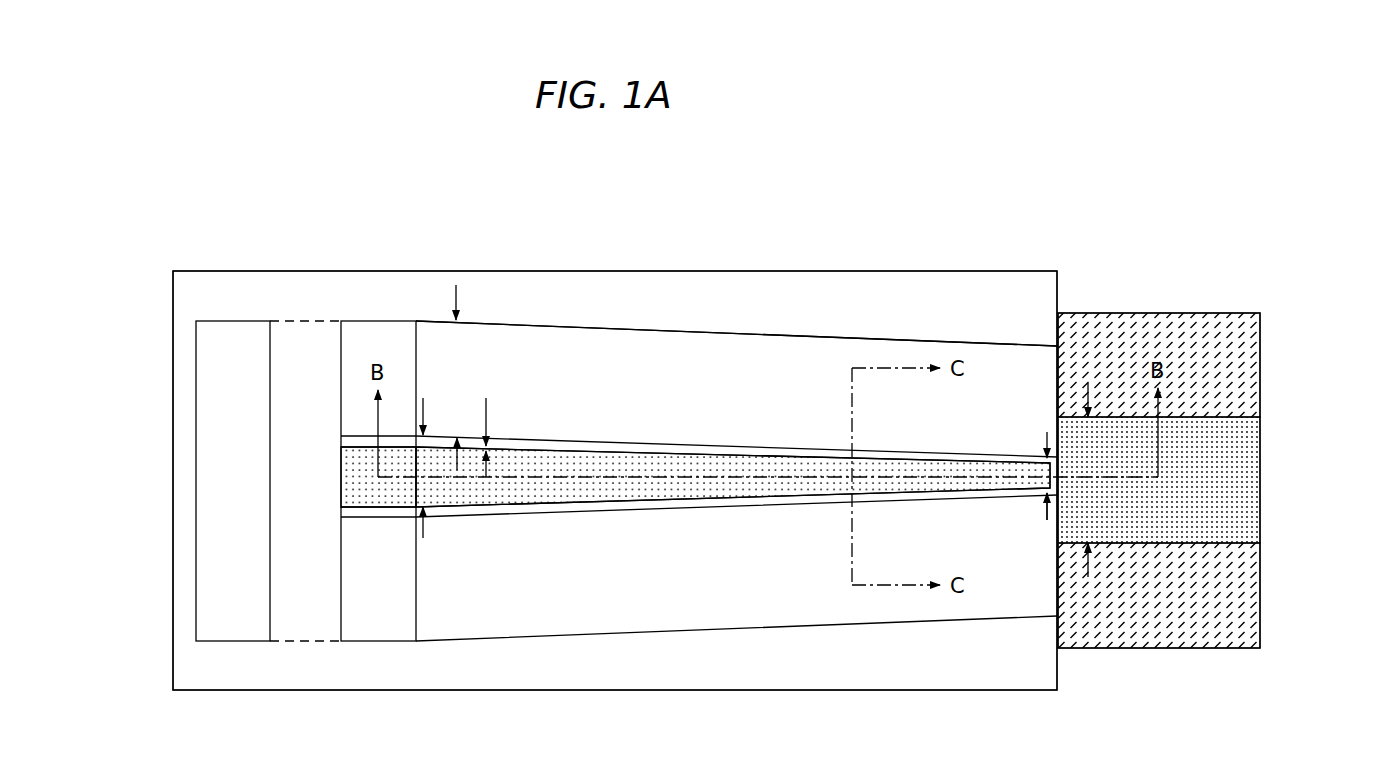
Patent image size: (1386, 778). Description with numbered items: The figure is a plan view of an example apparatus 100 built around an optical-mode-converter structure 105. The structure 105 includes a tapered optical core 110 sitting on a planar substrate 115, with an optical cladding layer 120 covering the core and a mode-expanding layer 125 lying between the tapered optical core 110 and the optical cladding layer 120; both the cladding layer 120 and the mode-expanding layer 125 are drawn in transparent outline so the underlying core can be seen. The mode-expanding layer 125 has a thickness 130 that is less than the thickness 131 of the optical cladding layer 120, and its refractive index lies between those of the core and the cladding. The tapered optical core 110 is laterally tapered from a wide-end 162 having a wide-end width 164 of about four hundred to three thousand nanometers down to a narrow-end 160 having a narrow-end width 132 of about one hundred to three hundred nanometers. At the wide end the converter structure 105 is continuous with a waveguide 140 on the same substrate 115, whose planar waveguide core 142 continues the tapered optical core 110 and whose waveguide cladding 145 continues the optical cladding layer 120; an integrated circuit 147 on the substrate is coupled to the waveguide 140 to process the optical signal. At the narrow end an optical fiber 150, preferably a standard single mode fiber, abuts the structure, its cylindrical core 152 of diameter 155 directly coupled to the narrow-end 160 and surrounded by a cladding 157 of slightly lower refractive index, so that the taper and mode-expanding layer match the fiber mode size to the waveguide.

The apparatus 100 is at (1232, 222).
The optical-mode-converter structure 105 is at (417, 296).
The tapered optical core 110 is at (667, 460).
The planar substrate 115 is at (616, 271).
The optical cladding layer 120 is at (795, 335).
The mode-expanding layer 125 is at (341, 443).
The thickness of mode-expanding layer 130 is at (486, 412).
The thickness of optical cladding layer 131 is at (456, 300).
The narrow-end width 132 is at (1046, 442).
The waveguide 140 is at (259, 432).
The planar waveguide core 142 is at (341, 480).
The waveguide cladding 145 is at (341, 350).
The integrated circuit 147 is at (196, 350).
The optical fiber 150 is at (1194, 434).
The cylindrical core 152 is at (1255, 480).
The diameter 155 is at (1090, 565).
The cladding 157 is at (1255, 342).
The narrow-end 160 is at (1008, 512).
The wide-end 162 is at (442, 543).
The wide-end width 164 is at (423, 412).